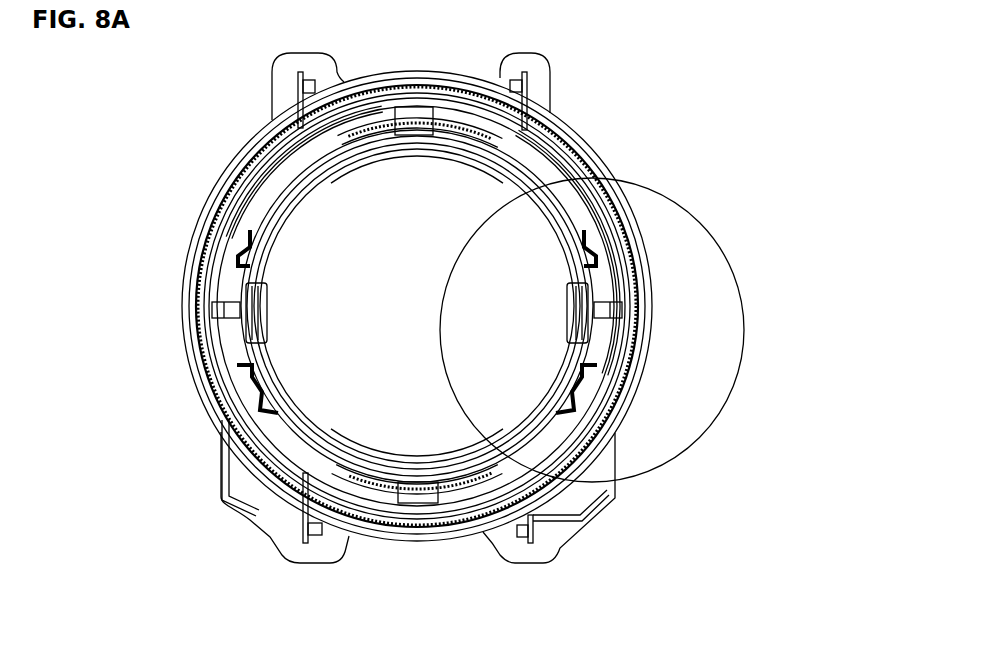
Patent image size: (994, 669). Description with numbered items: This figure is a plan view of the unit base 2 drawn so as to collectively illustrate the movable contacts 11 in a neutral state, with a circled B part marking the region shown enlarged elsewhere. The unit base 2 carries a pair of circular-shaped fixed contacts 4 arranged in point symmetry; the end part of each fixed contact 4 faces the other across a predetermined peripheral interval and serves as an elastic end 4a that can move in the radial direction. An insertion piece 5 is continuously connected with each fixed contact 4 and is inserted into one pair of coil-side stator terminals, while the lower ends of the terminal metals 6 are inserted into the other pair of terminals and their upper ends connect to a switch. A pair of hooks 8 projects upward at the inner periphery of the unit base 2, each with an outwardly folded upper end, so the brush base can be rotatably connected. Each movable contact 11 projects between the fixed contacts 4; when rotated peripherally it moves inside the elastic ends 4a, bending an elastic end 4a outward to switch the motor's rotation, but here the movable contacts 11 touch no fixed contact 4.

The unit base 2 is at (645, 350).
The fixed contact 4 is at (347, 147).
The elastic end 4a is at (247, 240).
The insertion piece 5 is at (528, 86).
The terminal metal 6 is at (233, 473).
The hook 8 is at (267, 313).
The movable contact 11 is at (226, 310).
The B part B is at (707, 438).